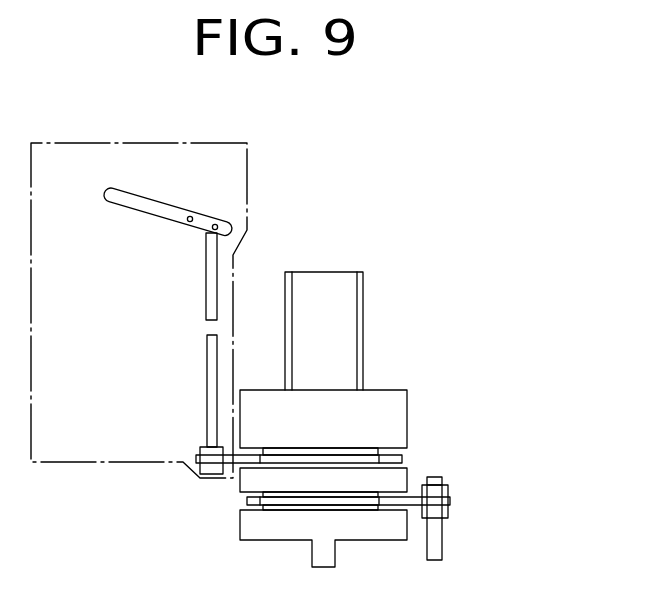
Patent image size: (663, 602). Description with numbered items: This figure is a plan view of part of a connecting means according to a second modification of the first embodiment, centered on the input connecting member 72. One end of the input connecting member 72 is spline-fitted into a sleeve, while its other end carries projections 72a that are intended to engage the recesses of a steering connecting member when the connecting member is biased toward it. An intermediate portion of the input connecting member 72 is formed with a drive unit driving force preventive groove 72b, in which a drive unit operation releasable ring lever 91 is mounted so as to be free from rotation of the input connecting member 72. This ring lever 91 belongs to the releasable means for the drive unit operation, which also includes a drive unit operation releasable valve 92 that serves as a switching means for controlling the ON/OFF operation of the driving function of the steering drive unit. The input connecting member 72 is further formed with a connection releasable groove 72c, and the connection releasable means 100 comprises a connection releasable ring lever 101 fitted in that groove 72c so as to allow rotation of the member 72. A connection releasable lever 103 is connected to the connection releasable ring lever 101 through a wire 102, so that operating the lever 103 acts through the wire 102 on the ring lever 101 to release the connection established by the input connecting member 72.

The connection releasable means 100 is at (250, 158).
The connection releasable lever 103 is at (122, 202).
The wire 102 is at (206, 375).
The connection releasable ring lever 101 is at (196, 460).
The input connecting member 72 is at (393, 403).
The connection releasable groove 72c is at (402, 460).
The drive unit driving force preventive groove 72b is at (249, 500).
The projections 72a is at (312, 551).
The drive unit operation releasable ring lever 91 is at (452, 502).
The drive unit operation releasable valve 92 is at (442, 547).